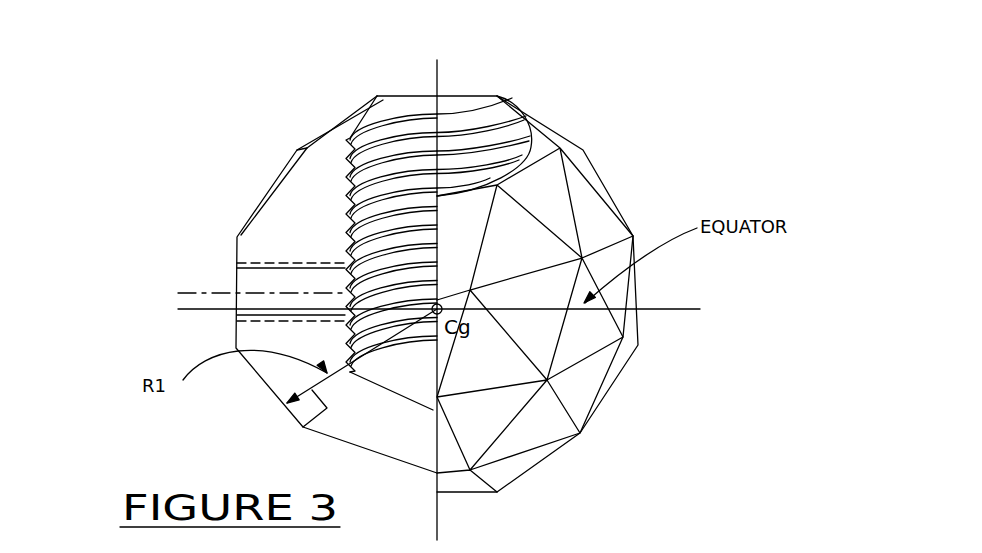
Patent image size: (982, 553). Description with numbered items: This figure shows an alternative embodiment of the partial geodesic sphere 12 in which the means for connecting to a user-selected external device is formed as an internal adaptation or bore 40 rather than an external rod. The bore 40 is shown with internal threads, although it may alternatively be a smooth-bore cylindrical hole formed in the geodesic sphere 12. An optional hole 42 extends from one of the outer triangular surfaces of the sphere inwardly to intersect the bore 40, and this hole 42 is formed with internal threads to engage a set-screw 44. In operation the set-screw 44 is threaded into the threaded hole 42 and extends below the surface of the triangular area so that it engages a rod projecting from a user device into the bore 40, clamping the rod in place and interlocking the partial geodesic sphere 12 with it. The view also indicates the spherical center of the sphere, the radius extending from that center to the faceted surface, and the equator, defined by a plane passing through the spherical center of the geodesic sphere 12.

The partial geodesic sphere 12 is at (607, 170).
The internal adaptation or bore 40 is at (476, 108).
The hole 42 is at (237, 291).
The set-screw 44 is at (237, 291).